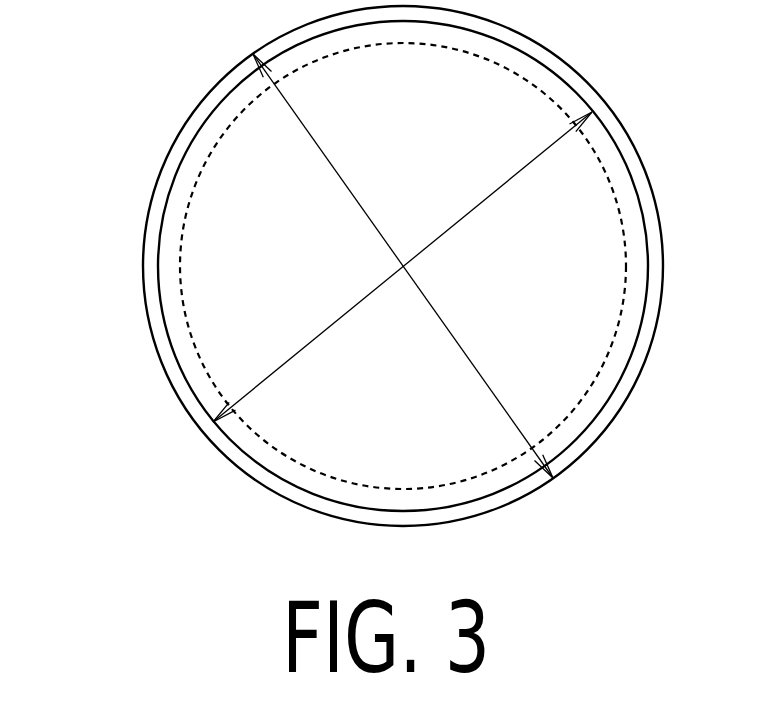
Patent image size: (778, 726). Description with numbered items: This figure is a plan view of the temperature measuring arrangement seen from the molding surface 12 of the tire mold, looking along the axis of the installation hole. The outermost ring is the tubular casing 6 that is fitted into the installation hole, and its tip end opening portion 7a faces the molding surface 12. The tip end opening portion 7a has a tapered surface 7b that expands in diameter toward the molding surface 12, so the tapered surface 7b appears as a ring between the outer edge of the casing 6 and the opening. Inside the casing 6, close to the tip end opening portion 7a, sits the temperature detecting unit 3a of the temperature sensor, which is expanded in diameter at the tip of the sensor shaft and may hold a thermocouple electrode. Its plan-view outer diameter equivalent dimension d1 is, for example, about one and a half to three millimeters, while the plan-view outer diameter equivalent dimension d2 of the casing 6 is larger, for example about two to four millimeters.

The casing 6 is at (193, 112).
The tapered surface 7b is at (158, 197).
The tip end opening portion 7a is at (186, 316).
The temperature detecting unit 3a is at (597, 217).
The molding surface 12 is at (668, 367).
The outer diameter equivalent dimension d1 is at (402, 267).
The outer diameter equivalent dimension d2 is at (403, 266).